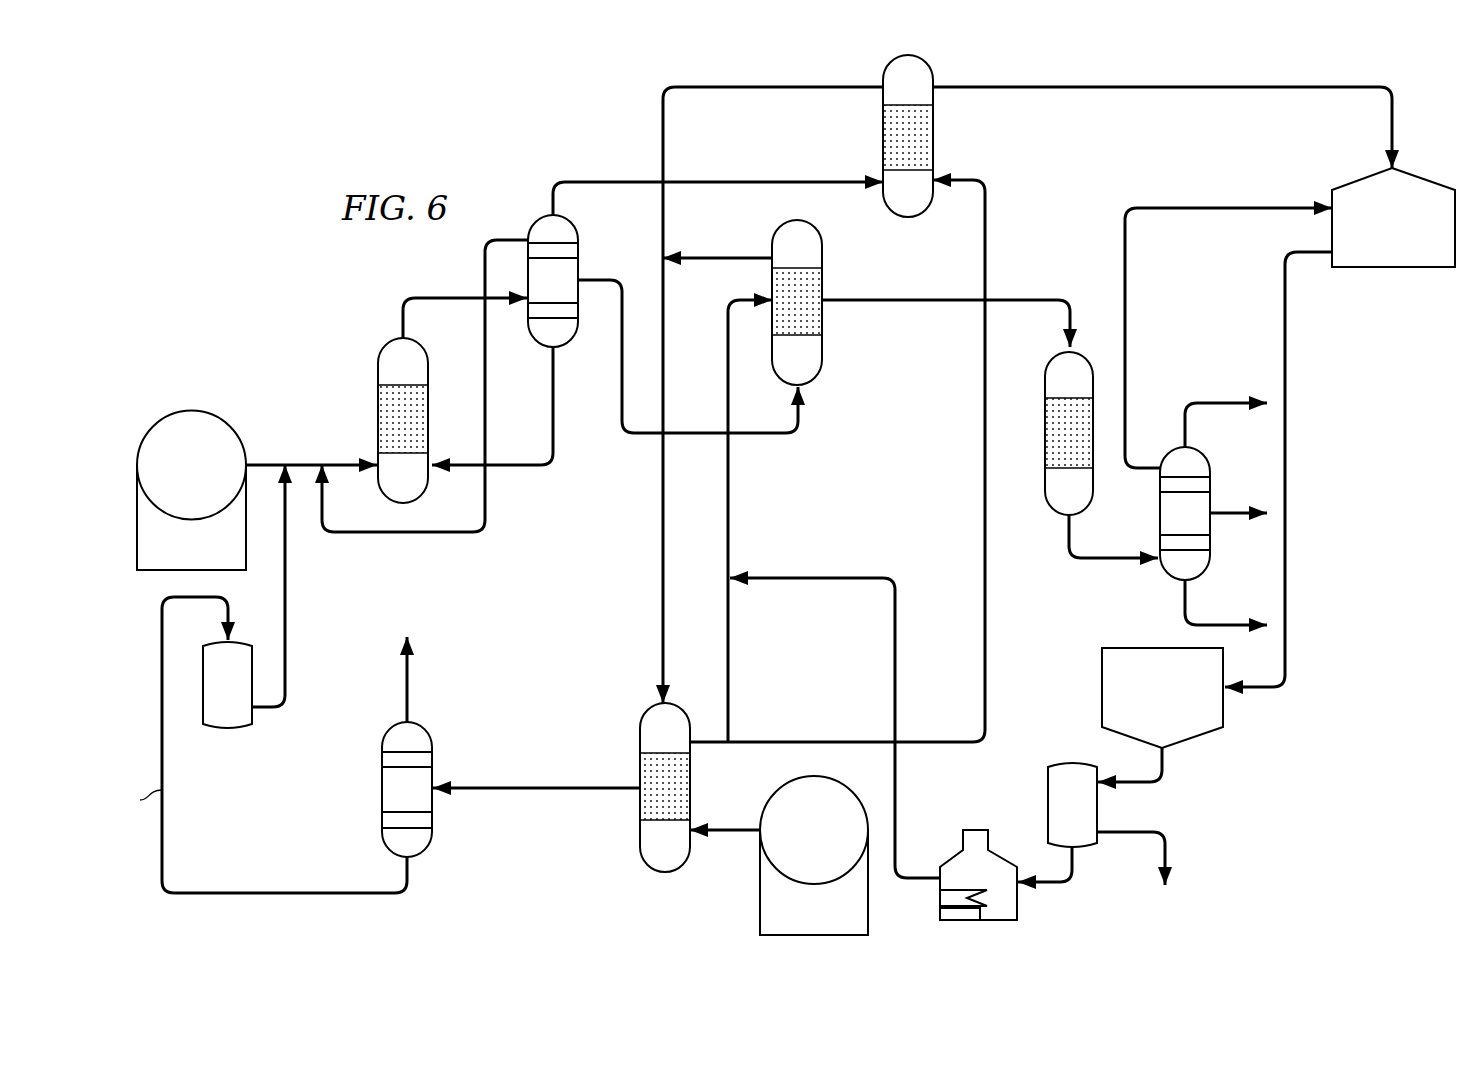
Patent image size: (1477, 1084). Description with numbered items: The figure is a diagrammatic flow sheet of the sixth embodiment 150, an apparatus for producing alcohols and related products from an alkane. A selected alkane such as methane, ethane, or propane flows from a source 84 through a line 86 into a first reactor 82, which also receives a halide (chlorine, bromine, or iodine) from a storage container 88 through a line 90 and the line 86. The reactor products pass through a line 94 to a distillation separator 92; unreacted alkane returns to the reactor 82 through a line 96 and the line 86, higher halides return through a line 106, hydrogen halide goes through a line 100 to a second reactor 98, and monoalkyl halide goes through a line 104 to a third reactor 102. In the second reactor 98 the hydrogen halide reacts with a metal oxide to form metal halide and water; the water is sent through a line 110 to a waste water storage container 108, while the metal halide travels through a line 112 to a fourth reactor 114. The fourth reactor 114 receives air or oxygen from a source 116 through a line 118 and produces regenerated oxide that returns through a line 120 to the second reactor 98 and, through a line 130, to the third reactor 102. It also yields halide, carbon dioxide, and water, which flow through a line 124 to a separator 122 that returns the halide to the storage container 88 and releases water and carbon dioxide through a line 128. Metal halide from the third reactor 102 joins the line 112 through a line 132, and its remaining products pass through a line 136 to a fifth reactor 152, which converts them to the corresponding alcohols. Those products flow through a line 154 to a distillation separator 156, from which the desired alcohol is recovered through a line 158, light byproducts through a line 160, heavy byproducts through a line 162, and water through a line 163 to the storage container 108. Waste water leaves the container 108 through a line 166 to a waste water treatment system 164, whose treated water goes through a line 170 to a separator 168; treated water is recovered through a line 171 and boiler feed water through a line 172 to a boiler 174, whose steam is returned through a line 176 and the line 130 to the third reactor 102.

The process system 150 is at (256, 296).
The first reactor 82 is at (377, 372).
The source 84 is at (178, 412).
The line 86 is at (302, 462).
The storage container 88 is at (215, 732).
The line 90 is at (286, 605).
The distillation separator 92 is at (578, 270).
The line 94 is at (437, 298).
The line 96 is at (400, 535).
The second reactor 98 is at (933, 140).
The line 100 is at (768, 182).
The third reactor 102 is at (822, 290).
The line 104 is at (765, 435).
The line 106 is at (515, 470).
The waste water storage container 108 is at (1418, 268).
The line 110 is at (1394, 122).
The line 112 is at (660, 572).
The fourth reactor 114 is at (640, 830).
The source 116 is at (760, 902).
The line 118 is at (740, 833).
The line 120 is at (985, 650).
The separator 122 is at (382, 802).
The line 124 is at (540, 792).
The line 128 is at (405, 690).
The line 130 is at (728, 520).
The line 132 is at (725, 258).
The line 136 is at (1018, 300).
The fifth reactor 152 is at (1052, 510).
The line 154 is at (1090, 562).
The distillation separator 156 is at (1210, 470).
The line 158 is at (1232, 520).
The line 160 is at (1222, 400).
The line 162 is at (1185, 600).
The line 163 is at (1225, 205).
The waste water treatment system 164 is at (1195, 738).
The line 166 is at (1287, 488).
The separator 168 is at (1048, 800).
The line 170 is at (1152, 783).
The line 171 is at (1167, 852).
The line 172 is at (1075, 870).
The boiler 174 is at (1018, 905).
The line 176 is at (815, 580).